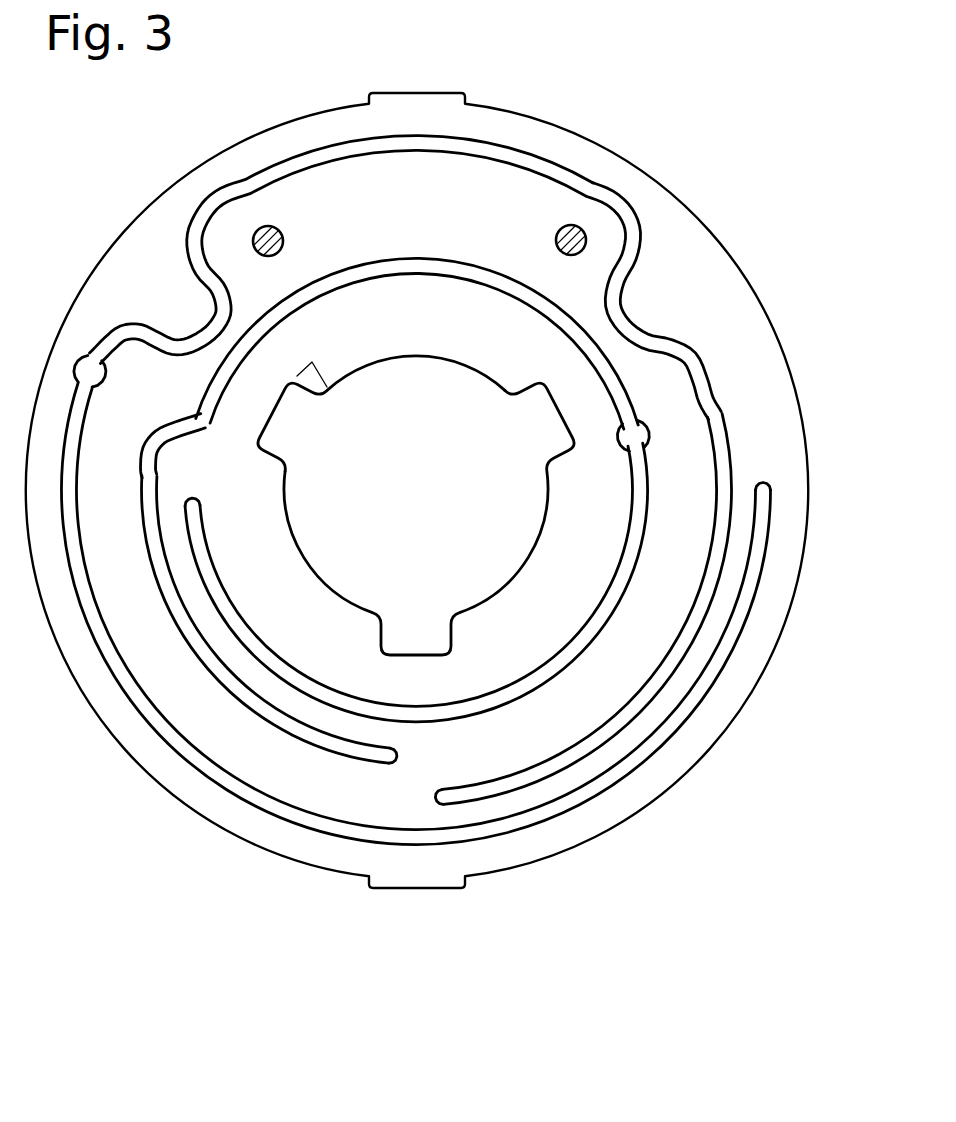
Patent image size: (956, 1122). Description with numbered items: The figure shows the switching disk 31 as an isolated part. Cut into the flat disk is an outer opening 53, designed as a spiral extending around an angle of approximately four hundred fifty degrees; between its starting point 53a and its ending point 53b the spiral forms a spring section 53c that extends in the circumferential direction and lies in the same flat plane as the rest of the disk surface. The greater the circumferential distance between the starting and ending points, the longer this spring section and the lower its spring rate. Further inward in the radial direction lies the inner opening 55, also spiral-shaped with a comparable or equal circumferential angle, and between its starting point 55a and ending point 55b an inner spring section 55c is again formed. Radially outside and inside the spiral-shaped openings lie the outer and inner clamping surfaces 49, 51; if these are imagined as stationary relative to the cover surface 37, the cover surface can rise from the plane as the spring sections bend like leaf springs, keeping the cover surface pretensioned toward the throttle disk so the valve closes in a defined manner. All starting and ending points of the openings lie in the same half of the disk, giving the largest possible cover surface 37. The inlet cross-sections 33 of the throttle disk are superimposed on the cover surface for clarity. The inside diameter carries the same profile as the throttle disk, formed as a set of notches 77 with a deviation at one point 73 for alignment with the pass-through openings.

The switching disk 31 is at (214, 904).
The inlet cross-sections 33 is at (259, 229).
The cover surface 37 is at (558, 204).
The outer clamping surface 49 is at (772, 408).
The inner clamping surface 51 is at (477, 683).
The outer opening 53 is at (642, 755).
The starting point of outer opening 53a is at (770, 490).
The ending point of outer opening 53b is at (440, 803).
The outer spring section 53c is at (675, 683).
The inner opening 55 is at (408, 717).
The starting point of inner opening 55a is at (382, 767).
The ending point of inner opening 55b is at (193, 512).
The inner spring section 55c is at (260, 687).
The deviation point of the profile 73 is at (305, 389).
The notches 77 is at (277, 421).